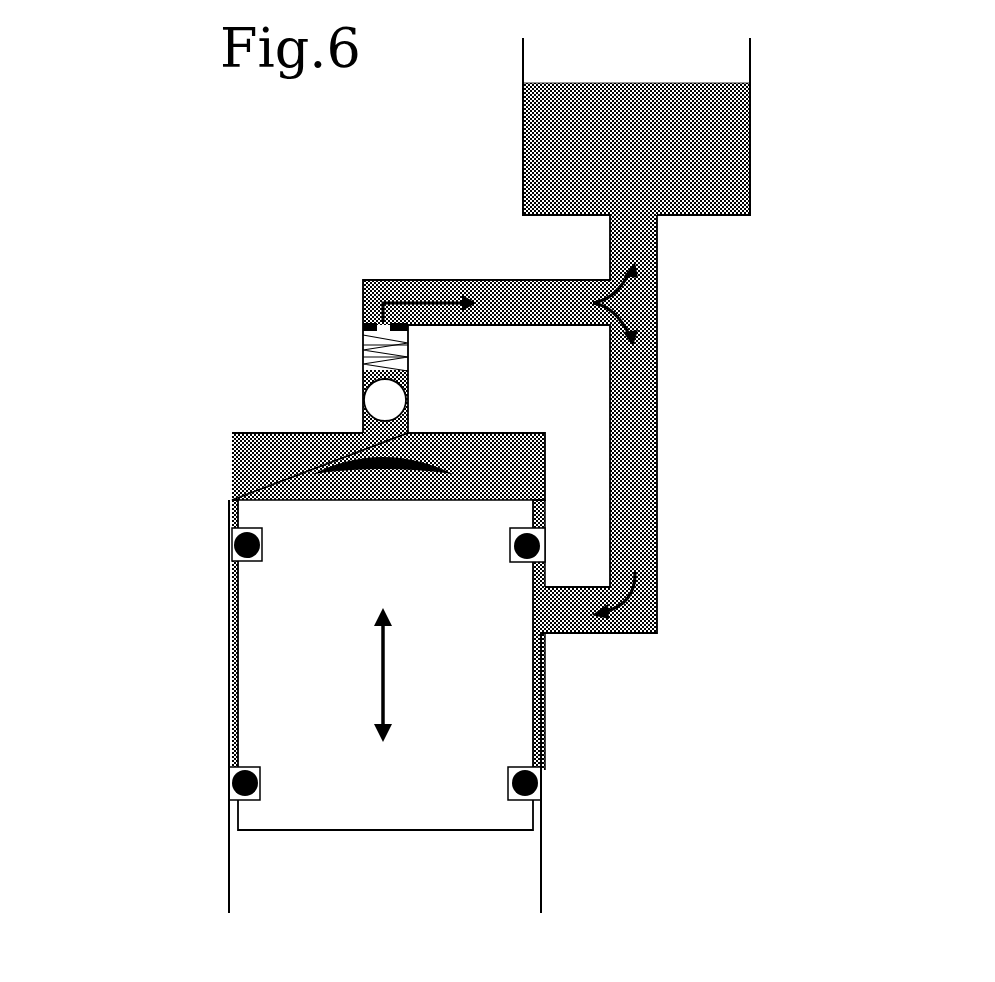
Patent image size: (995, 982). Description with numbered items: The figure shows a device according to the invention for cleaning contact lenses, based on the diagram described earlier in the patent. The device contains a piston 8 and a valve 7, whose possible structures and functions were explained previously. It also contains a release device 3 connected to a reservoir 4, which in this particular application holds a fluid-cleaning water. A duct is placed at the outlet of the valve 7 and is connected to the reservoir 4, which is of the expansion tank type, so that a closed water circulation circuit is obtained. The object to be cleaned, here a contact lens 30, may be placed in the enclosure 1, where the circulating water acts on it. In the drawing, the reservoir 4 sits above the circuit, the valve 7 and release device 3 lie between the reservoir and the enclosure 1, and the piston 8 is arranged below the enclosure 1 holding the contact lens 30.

The enclosure 1 is at (250, 473).
The release device 3 is at (568, 612).
The reservoir 4 is at (707, 143).
The valve 7 is at (383, 400).
The piston 8 is at (257, 602).
The contact lens 30 is at (420, 458).